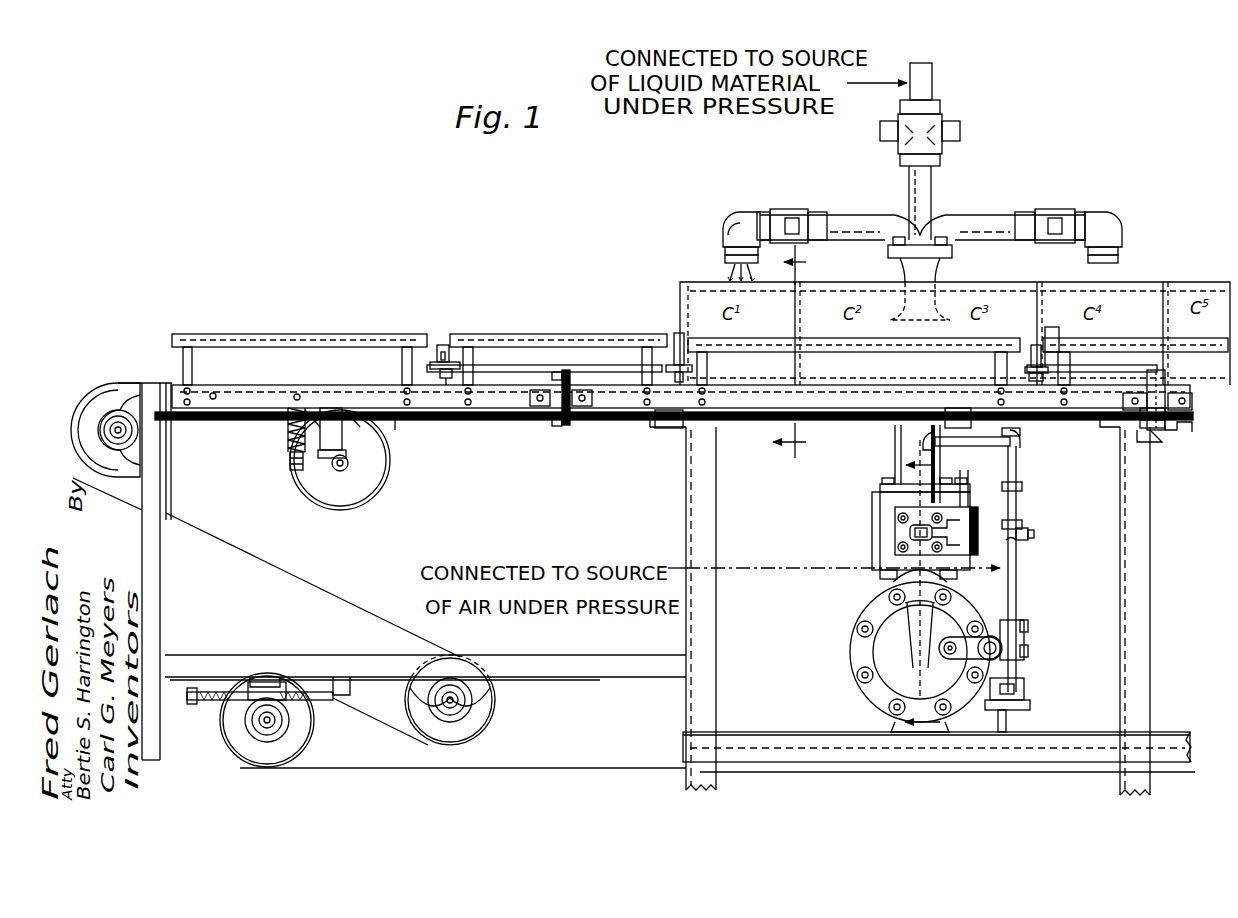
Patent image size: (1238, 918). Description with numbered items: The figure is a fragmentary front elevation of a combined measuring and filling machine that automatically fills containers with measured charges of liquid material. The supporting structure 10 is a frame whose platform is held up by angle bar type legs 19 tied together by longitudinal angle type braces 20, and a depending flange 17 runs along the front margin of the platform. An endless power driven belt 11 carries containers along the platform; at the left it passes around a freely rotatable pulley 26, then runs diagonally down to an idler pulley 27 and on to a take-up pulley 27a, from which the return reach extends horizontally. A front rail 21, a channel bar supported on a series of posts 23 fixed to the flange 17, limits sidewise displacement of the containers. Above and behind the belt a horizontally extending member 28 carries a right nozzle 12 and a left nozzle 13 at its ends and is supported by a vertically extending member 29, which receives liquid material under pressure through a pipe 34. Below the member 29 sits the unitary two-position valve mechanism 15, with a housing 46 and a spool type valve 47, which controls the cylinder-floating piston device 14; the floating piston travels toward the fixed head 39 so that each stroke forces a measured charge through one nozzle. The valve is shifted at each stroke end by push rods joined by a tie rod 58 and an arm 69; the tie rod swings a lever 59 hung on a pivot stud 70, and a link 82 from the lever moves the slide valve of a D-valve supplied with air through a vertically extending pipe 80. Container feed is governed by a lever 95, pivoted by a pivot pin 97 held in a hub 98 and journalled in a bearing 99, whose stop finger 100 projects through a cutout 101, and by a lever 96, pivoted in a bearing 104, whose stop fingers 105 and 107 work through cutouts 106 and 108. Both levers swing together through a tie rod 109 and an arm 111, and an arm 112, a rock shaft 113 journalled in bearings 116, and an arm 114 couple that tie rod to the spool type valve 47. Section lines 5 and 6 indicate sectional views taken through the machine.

The section line 5- 5 is at (797, 351).
The section line 6- 6 is at (932, 587).
The supporting structure 10 is at (717, 553).
The endless power driven belt 11 is at (393, 622).
The nozzle 12 is at (1118, 250).
The nozzle 13 is at (728, 249).
The cylinder-floating piston device 14 is at (866, 610).
The unitary two-position valve mechanism 15 is at (871, 505).
The depending flange 17 is at (490, 406).
The angle bar type legs 19 is at (717, 630).
The angle type braces 20 is at (597, 660).
The front rail 21 is at (850, 353).
The posts 23 is at (715, 364).
The freely rotatable pulley 26 is at (112, 383).
The idler pulley 27 is at (492, 716).
The take-up pulley 27a is at (250, 750).
The horizontally extending member 28 is at (985, 216).
The vertically extending member 29 is at (950, 282).
The pipe 34 is at (931, 183).
The fixed head 39 is at (855, 646).
The housing 46 is at (895, 525).
The spool type valve 47 is at (910, 537).
The tie rod 58 is at (1003, 647).
The lever 59 is at (953, 645).
The arm 69 is at (1005, 625).
The pivot stud 70 is at (1028, 626).
The vertically extending pipe 80 is at (1017, 590).
The link 82 is at (1025, 688).
The lever 95 is at (1108, 373).
The lever 96 is at (601, 365).
The pivot pin 97 is at (1160, 432).
The hub 98 is at (1166, 380).
The bearing 99 is at (1192, 404).
The stop finger 100 is at (1034, 356).
The cutout 101 is at (1045, 350).
The bearing 104 is at (556, 410).
The stop finger 105 is at (678, 335).
The cutout 106 is at (676, 350).
The stop finger 107 is at (443, 345).
The cutout 108 is at (452, 346).
The tie rod 109 is at (1068, 421).
The arm 111 is at (552, 428).
The arm 112 is at (1017, 550).
The rock shaft 113 is at (1016, 466).
The arm 114 is at (955, 406).
The bearings 116 is at (978, 515).